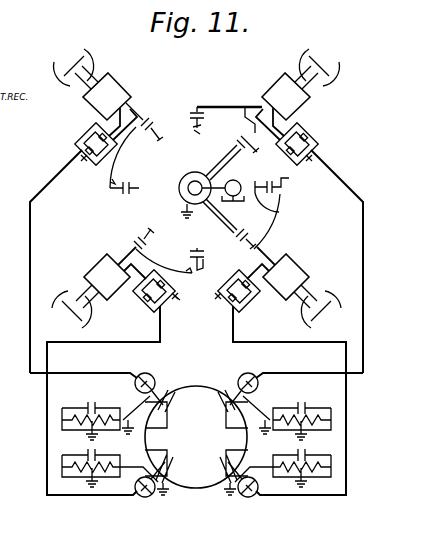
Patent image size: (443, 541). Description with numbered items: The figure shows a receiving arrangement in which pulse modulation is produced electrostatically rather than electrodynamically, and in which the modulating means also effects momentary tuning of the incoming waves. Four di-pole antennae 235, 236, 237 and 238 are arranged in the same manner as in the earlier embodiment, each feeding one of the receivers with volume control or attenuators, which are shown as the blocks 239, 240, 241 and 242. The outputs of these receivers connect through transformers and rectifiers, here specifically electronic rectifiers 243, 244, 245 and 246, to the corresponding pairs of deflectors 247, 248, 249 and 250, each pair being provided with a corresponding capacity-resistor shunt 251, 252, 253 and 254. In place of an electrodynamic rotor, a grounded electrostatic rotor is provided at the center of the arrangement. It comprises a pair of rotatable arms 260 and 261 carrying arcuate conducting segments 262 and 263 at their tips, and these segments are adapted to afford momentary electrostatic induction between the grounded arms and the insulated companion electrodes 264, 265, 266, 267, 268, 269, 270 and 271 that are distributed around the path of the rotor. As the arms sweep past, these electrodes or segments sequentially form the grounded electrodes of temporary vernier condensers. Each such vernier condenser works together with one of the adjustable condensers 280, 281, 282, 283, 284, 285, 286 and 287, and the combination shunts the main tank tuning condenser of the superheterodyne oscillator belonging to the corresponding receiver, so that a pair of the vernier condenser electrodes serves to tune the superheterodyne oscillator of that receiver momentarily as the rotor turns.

The di-pole antenna 235 is at (69, 65).
The di-pole antenna 236 is at (319, 67).
The di-pole antenna 237 is at (317, 311).
The di-pole antenna 238 is at (70, 310).
The receiver 239 is at (107, 96).
The receiver 240 is at (286, 96).
The receiver 241 is at (286, 277).
The receiver 242 is at (107, 277).
The electronic rectifier 243 is at (148, 375).
The electronic rectifier 244 is at (247, 376).
The electronic rectifier 245 is at (251, 497).
The electronic rectifier 246 is at (143, 497).
The deflectors 247 is at (171, 392).
The deflectors 248 is at (222, 404).
The deflectors 249 is at (222, 485).
The deflectors 250 is at (175, 471).
The capacity-resistor shunt 251 is at (106, 415).
The capacity-resistor shunt 252 is at (314, 410).
The capacity-resistor shunt 253 is at (333, 466).
The capacity-resistor shunt 254 is at (62, 467).
The rotatable arm 260 is at (219, 169).
The rotatable arm 261 is at (227, 217).
The arcuate conducting segment 262 is at (233, 183).
The arcuate conducting segment 263 is at (233, 231).
The companion electrode 264 is at (137, 191).
The companion electrode 265 is at (157, 146).
The companion electrode 266 is at (194, 140).
The companion electrode 267 is at (254, 138).
The companion electrode 268 is at (280, 212).
The companion electrode 269 is at (270, 231).
The companion electrode 270 is at (195, 250).
The companion electrode 271 is at (140, 225).
The adjustable condenser 280 is at (115, 166).
The adjustable condenser 281 is at (149, 116).
The adjustable condenser 282 is at (205, 115).
The adjustable condenser 283 is at (229, 97).
The adjustable condenser 284 is at (284, 185).
The adjustable condenser 285 is at (235, 250).
The adjustable condenser 286 is at (190, 293).
The adjustable condenser 287 is at (134, 243).